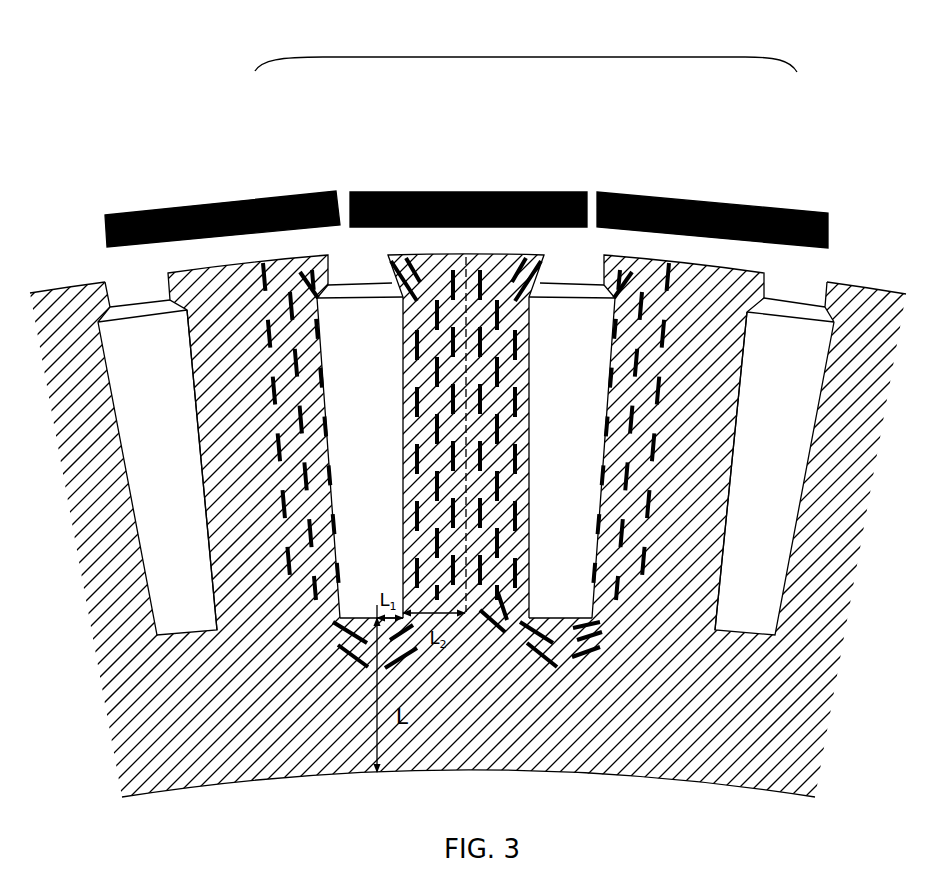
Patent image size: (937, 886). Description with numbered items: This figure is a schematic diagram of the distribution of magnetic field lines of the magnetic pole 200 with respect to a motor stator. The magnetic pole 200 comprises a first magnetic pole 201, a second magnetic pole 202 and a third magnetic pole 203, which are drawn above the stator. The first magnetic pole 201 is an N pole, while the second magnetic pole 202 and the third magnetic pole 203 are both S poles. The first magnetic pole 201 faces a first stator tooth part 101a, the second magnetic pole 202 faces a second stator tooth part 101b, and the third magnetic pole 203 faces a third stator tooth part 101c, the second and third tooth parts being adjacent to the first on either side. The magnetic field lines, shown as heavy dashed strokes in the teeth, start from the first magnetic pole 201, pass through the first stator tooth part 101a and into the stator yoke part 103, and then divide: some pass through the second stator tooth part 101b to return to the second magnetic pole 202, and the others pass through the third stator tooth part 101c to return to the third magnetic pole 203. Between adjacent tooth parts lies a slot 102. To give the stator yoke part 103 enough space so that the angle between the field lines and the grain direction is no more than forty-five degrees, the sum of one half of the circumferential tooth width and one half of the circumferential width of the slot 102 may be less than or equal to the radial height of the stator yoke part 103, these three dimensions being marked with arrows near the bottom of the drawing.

The magnetic pole 200 is at (527, 57).
The first magnetic pole 201 is at (474, 191).
The second magnetic pole 202 is at (217, 202).
The third magnetic pole 203 is at (737, 203).
The first stator tooth part 101a is at (508, 268).
The second stator tooth part 101b is at (240, 298).
The third stator tooth part 101c is at (693, 315).
The slot 102 is at (806, 335).
The stator yoke part 103 is at (780, 735).